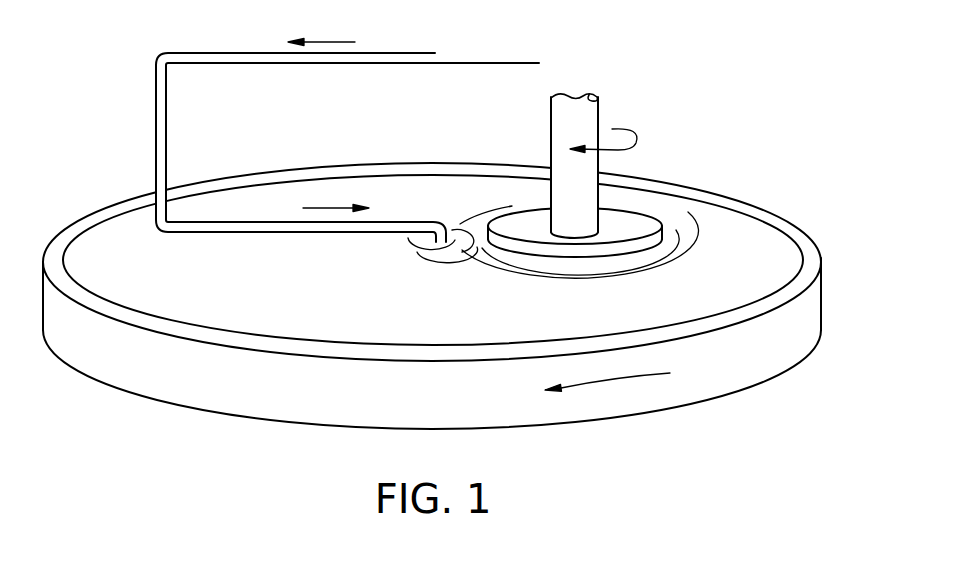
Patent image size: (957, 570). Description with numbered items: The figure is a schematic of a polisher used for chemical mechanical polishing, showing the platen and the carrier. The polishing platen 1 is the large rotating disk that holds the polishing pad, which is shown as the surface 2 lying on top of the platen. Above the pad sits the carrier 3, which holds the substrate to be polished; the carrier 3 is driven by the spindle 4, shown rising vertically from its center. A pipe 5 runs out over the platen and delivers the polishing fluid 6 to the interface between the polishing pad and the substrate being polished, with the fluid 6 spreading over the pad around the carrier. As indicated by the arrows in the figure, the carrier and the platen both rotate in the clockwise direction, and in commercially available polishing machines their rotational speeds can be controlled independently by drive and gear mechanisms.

The polishing platen 1 is at (817, 305).
The polishing pad 2 is at (752, 233).
The carrier 3 is at (632, 218).
The spindle 4 is at (557, 126).
The pipe 5 is at (288, 234).
The polishing fluid 6 is at (498, 215).